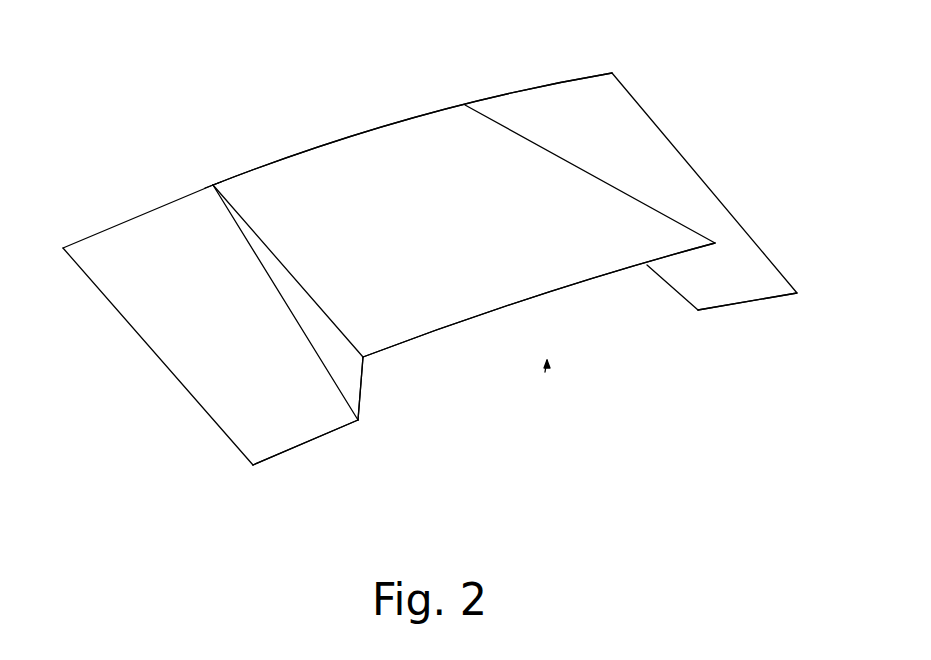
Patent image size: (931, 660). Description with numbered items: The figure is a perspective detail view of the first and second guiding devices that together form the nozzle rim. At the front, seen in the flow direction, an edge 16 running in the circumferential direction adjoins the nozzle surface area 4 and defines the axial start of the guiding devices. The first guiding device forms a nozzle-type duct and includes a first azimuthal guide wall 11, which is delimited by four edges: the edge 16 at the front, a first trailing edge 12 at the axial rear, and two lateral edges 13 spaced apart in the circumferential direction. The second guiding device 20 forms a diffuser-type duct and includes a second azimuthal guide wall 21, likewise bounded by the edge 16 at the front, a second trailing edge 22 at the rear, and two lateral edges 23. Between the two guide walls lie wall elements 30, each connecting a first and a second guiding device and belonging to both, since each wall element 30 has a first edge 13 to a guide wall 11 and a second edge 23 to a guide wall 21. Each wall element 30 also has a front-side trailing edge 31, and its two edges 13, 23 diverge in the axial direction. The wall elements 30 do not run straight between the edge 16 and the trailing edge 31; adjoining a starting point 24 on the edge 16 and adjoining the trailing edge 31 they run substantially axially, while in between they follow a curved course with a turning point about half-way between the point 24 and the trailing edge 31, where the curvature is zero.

The nozzle surface area 4 is at (435, 39).
The azimuthal guide wall 11 is at (173, 293).
The trailing edge 12 is at (302, 447).
The lateral edges 13 is at (290, 317).
The edge 16 is at (355, 135).
The second guiding device 20 is at (545, 370).
The azimuthal guide wall 21 is at (440, 210).
The trailing edge 22 is at (440, 330).
The lateral edges 23 is at (290, 262).
The starting point 24 is at (213, 185).
The wall elements 30 is at (350, 392).
The front-side trailing edge 31 is at (363, 380).